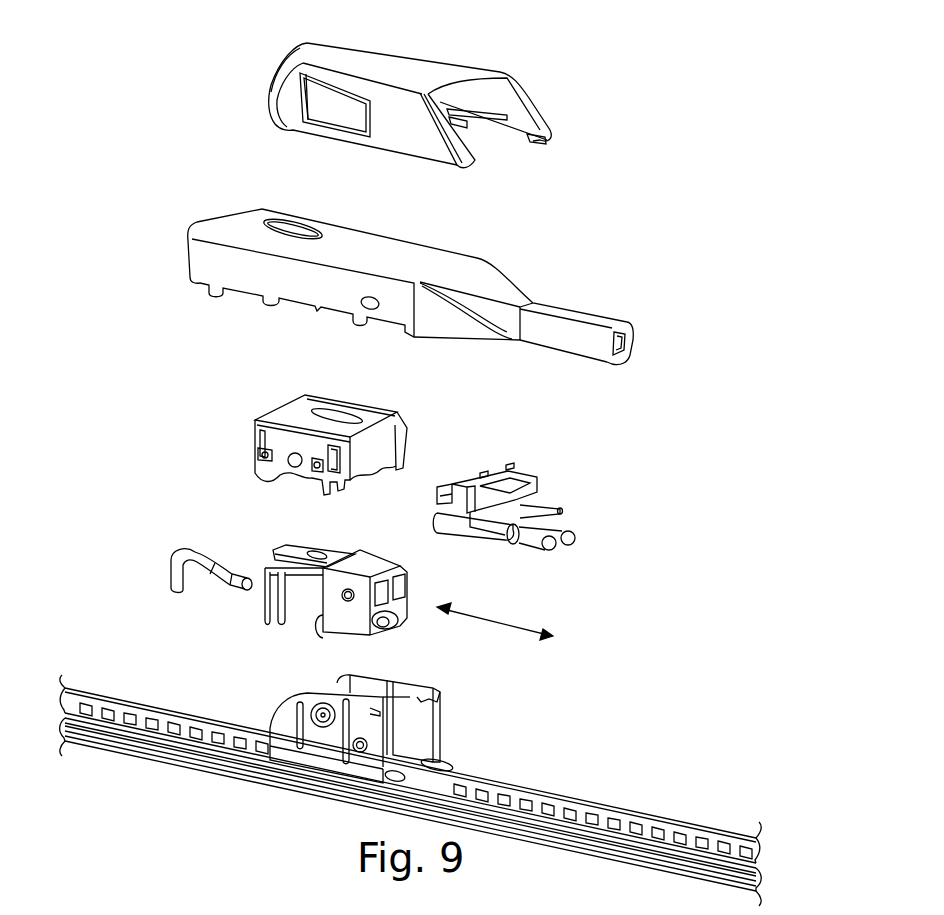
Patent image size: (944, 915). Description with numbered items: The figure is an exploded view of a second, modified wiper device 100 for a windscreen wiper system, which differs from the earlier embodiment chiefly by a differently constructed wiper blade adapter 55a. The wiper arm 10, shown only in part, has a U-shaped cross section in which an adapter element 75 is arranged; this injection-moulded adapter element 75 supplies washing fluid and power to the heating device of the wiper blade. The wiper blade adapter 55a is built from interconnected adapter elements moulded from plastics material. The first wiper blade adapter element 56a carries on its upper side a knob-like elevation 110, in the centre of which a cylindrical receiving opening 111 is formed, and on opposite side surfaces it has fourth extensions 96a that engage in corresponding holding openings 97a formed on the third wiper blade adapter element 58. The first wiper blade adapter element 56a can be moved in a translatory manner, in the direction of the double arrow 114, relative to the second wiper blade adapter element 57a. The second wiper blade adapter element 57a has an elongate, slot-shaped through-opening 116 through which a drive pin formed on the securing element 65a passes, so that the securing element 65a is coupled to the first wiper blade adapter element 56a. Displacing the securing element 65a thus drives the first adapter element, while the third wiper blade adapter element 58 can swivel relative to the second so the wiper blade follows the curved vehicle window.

The wiper device 100 is at (187, 422).
The securing element 65a is at (332, 54).
The wiper arm 10 is at (585, 323).
The second wiper blade adapter element 57a is at (266, 413).
The through-opening 116 is at (352, 416).
The adapter element 75 is at (548, 491).
The wiper blade adapter 55a is at (266, 541).
The receiving opening 111 is at (312, 551).
The elevation 110 is at (342, 556).
The fourth extensions 96a is at (348, 600).
The first wiper blade adapter element 56a is at (388, 615).
The double arrow 114 is at (536, 624).
The holding openings 97a is at (440, 699).
The third wiper blade adapter element 58 is at (416, 729).